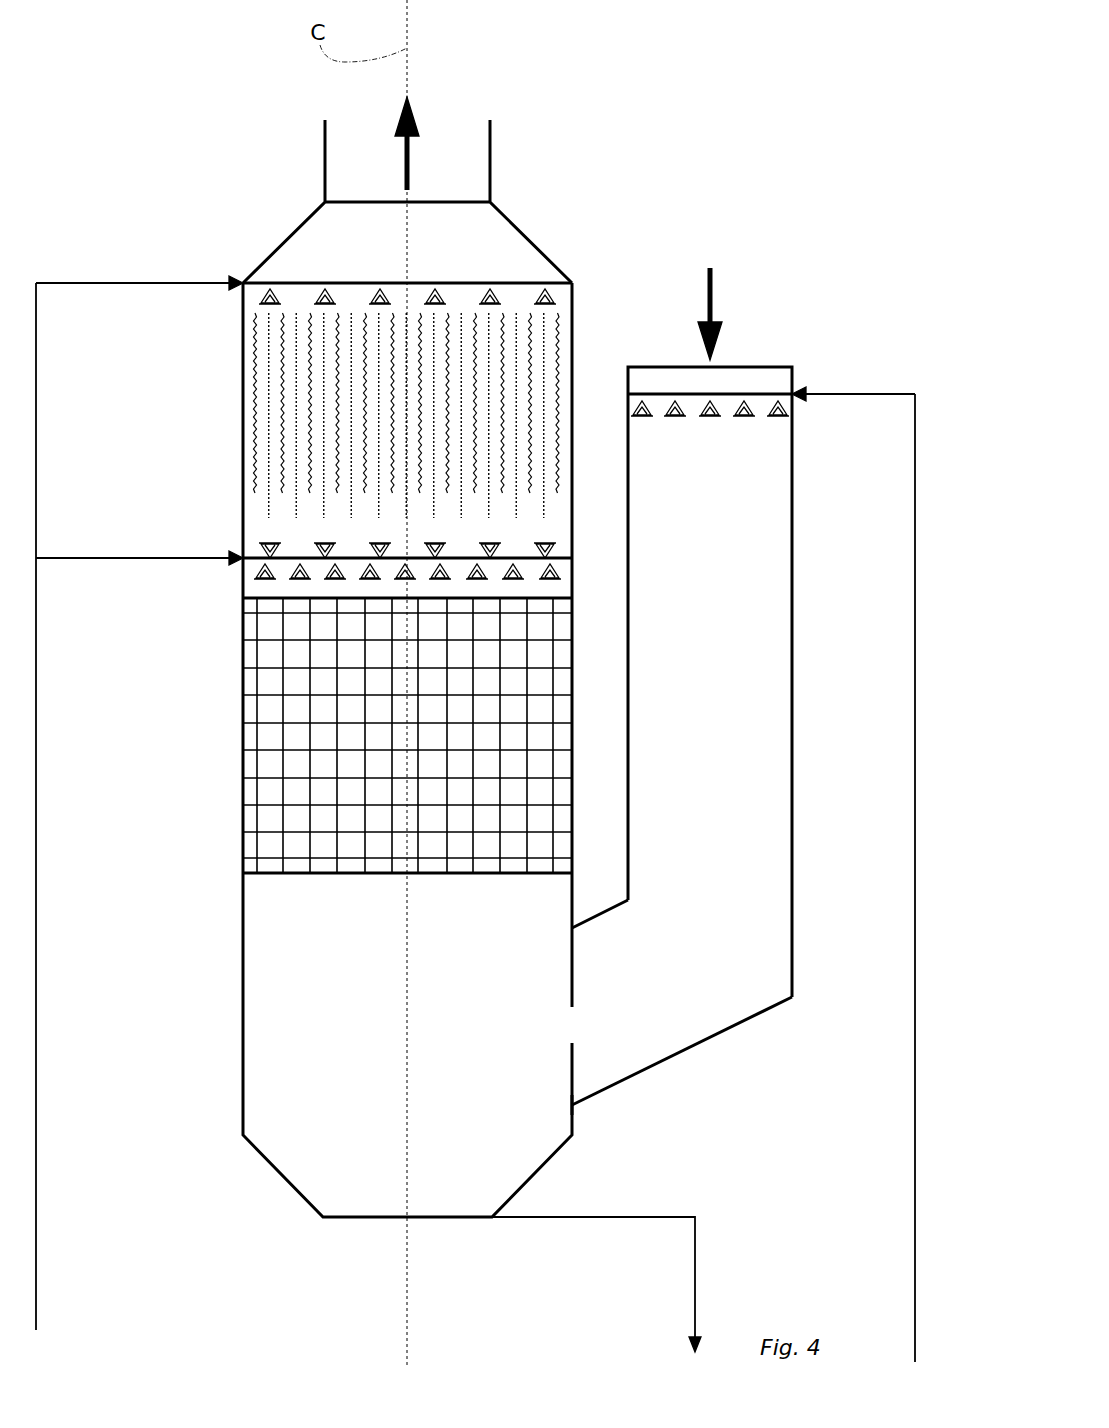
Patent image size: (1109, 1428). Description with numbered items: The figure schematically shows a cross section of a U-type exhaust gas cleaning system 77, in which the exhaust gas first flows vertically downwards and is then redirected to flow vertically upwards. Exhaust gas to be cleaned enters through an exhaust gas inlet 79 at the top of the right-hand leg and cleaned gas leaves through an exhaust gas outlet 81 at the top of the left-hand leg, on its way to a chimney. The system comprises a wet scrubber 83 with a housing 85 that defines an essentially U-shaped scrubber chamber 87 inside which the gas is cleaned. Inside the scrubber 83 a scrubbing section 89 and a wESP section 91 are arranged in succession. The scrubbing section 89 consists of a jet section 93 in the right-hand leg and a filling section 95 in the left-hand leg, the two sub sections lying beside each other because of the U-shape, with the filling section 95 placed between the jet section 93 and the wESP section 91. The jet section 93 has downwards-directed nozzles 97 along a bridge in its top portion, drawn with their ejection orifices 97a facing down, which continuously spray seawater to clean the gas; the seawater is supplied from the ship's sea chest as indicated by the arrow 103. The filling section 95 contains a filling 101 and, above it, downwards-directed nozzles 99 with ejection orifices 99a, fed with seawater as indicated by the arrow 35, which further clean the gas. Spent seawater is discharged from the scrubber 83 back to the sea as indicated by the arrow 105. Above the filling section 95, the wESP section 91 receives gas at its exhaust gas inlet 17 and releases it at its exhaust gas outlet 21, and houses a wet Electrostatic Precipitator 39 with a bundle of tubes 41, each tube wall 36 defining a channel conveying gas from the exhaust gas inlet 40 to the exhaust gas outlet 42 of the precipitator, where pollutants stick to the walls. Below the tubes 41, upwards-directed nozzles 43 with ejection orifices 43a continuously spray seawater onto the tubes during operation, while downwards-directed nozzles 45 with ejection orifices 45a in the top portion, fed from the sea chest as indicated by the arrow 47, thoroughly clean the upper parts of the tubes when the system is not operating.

The exhaust gas cleaning system 77 is at (675, 132).
The exhaust gas inlet 17 is at (498, 562).
The exhaust gas outlet 81 is at (366, 140).
The exhaust gas outlet 21 is at (512, 283).
The fourth ejection devices or nozzles 45 is at (386, 258).
The ejection orifice 45a is at (262, 300).
The tubes 41 is at (392, 349).
The exhaust gas outlet 42 is at (310, 317).
The tube wall 36 is at (545, 320).
The wESP section 91 is at (243, 462).
The wet Electrostatic Precipitator 39 is at (578, 368).
The exhaust gas inlet 40 is at (560, 520).
The first ejection devices or nozzles 43 is at (386, 528).
The ejection orifice 43a is at (540, 540).
The third ejection devices or nozzles 99 is at (333, 622).
The upward spray nozzle 99a is at (300, 580).
The filling 101 is at (275, 725).
The filling section 95 is at (272, 812).
The arrow 47 is at (115, 283).
The arrow 35 is at (115, 558).
The jet section 93 is at (730, 913).
The wet scrubber 83 is at (762, 367).
The exhaust gas inlet 79 is at (735, 370).
The second ejection devices or nozzles 97 is at (750, 498).
The inlet duct spray nozzle 97a is at (778, 415).
The arrow 103 is at (857, 394).
The scrubber chamber 87 is at (552, 1035).
The housing 85 is at (760, 1017).
The scrubbing section 89 is at (575, 1105).
The arrow 105 is at (697, 1270).